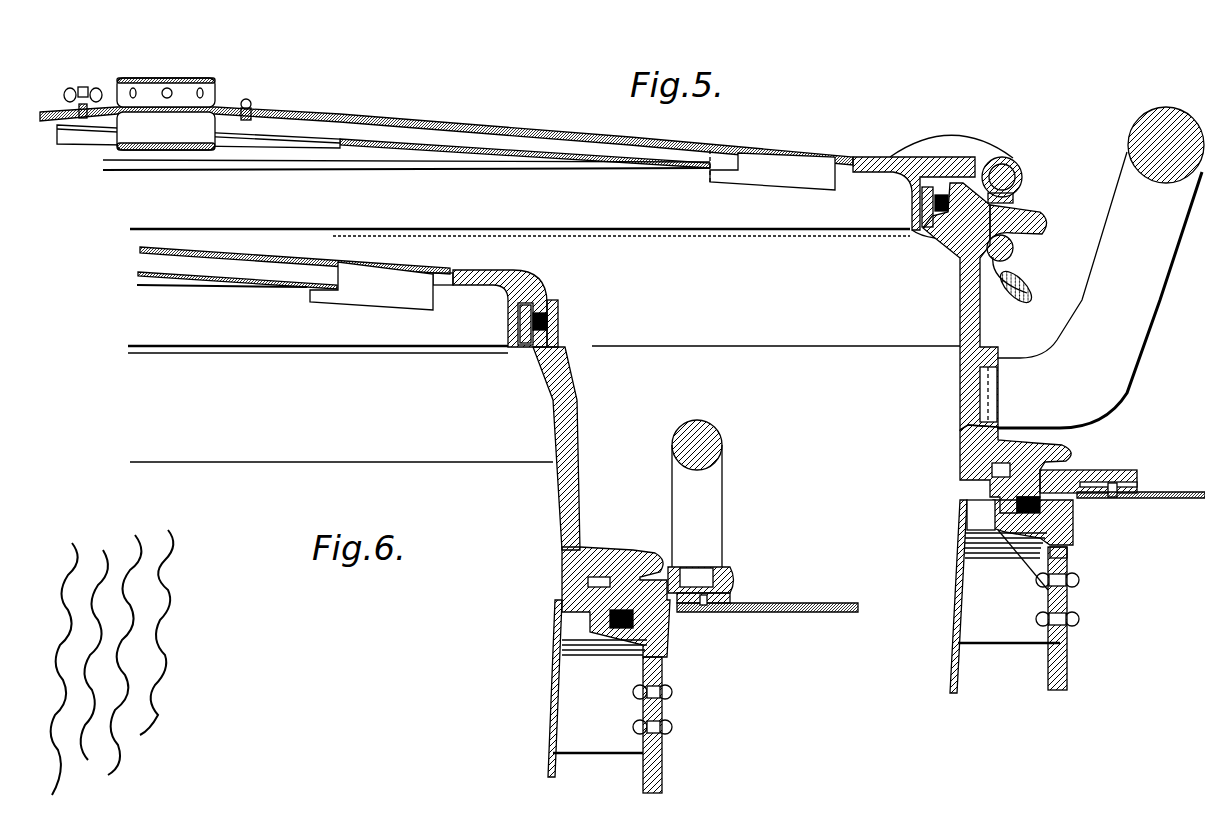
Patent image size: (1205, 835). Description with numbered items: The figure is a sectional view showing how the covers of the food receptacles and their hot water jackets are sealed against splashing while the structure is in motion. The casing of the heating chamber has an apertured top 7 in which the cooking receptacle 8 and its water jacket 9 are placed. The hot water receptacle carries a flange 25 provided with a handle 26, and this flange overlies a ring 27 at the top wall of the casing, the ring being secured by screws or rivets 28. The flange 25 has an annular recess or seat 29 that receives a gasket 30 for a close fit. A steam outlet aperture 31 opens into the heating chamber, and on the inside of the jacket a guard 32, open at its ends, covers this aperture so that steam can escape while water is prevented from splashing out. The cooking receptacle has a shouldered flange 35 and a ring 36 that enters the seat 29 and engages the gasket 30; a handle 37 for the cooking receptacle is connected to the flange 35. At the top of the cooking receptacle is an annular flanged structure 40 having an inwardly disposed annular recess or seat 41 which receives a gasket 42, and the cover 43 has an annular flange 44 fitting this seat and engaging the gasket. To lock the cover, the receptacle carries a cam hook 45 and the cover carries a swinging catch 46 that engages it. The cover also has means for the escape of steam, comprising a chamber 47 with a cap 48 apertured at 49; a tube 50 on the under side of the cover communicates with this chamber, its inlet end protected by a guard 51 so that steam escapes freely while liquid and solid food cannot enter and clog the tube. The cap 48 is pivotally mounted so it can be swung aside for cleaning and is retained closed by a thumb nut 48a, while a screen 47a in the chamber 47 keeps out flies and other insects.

In FIG. 5, the apertured top 7 is at (1196, 494).
In FIG. 6, the apertured top 7 is at (846, 606).
In FIG. 5, the cooking receptacle 8 is at (958, 613).
In FIG. 6, the cooking receptacle 8 is at (555, 670).
In FIG. 5, the water jacket 9 is at (1066, 663).
In FIG. 6, the water jacket 9 is at (661, 767).
In FIG. 5, the flange 25 is at (1113, 461).
In FIG. 6, the flange 25 is at (734, 576).
In FIG. 6, the handle 26 is at (712, 500).
In FIG. 6, the ring 27 is at (731, 600).
In FIG. 5, the screw or rivet 28 is at (1113, 497).
In FIG. 6, the screw or rivet 28 is at (705, 605).
In FIG. 5, the annular recess or seat 29 is at (1000, 532).
In FIG. 6, the annular recess or seat 29 is at (610, 650).
In FIG. 5, the gasket 30 is at (1040, 513).
In FIG. 6, the gasket 30 is at (665, 638).
In FIG. 5, the steam outlet aperture 31 is at (1066, 554).
In FIG. 5, the guard 32 is at (1028, 570).
In FIG. 5, the shouldered flange 35 is at (1076, 441).
In FIG. 6, the shouldered flange 35 is at (641, 556).
In FIG. 5, the ring 36 is at (1027, 480).
In FIG. 6, the ring 36 is at (580, 590).
In FIG. 5, the handle 37 is at (1100, 267).
In FIG. 5, the annular flanged structure 40 is at (961, 287).
In FIG. 6, the annular flanged structure 40 is at (557, 408).
In FIG. 5, the annular recess or seat 41 is at (920, 232).
In FIG. 5, the gasket 42 is at (918, 204).
In FIG. 6, the gasket 42 is at (551, 327).
In FIG. 5, the cover 43 is at (842, 158).
In FIG. 6, the cover 43 is at (476, 280).
In FIG. 5, the annular flange 44 is at (975, 190).
In FIG. 6, the annular flange 44 is at (558, 304).
In FIG. 5, the cam hook 45 is at (1043, 226).
In FIG. 5, the swinging catch 46 is at (1030, 292).
In FIG. 5, the chamber 47 is at (198, 133).
In FIG. 5, the screen 47a is at (195, 150).
In FIG. 5, the cap 48 is at (166, 83).
In FIG. 5, the thumb nut 48a is at (86, 86).
In FIG. 5, the aperture 49 is at (175, 92).
In FIG. 5, the tube 50 is at (428, 132).
In FIG. 6, the tube 50 is at (265, 270).
In FIG. 5, the guard 51 is at (772, 170).
In FIG. 6, the guard 51 is at (371, 286).